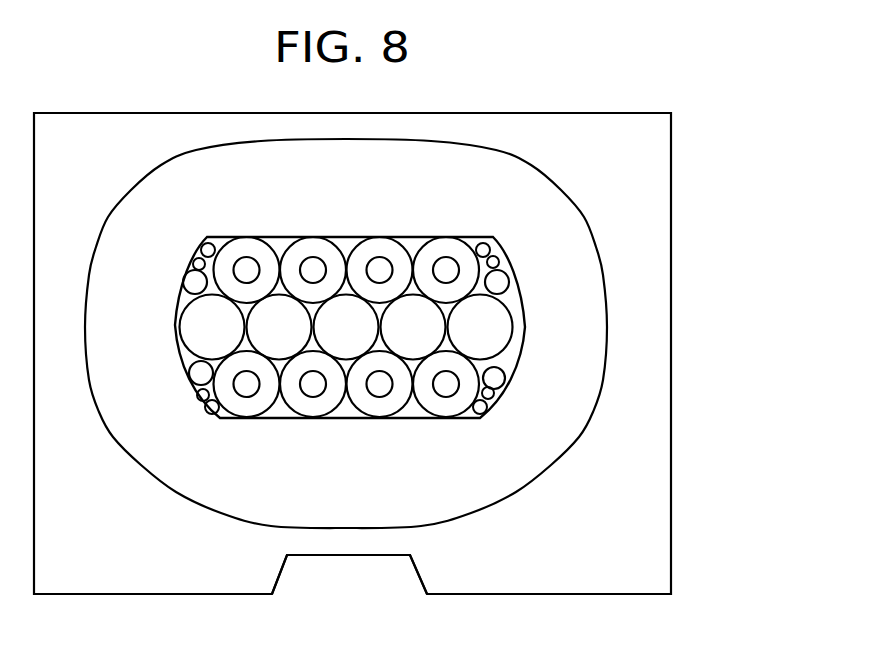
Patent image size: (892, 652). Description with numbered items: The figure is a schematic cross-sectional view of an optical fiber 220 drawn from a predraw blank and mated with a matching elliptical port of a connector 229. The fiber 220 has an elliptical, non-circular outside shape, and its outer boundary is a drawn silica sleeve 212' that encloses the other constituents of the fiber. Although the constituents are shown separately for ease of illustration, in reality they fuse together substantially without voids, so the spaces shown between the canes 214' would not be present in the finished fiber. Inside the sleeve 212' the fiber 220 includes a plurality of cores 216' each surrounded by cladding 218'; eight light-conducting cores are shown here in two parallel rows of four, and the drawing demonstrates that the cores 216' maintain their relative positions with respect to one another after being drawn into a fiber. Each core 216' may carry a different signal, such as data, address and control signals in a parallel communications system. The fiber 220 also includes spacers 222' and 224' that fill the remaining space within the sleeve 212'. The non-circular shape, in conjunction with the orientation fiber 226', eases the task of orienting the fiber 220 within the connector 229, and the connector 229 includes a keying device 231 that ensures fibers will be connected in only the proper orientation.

The fiber 220 is at (368, 333).
The drawn silica sleeve 212' is at (368, 333).
The cladding 218' is at (365, 323).
The orientation fiber 226' is at (327, 237).
The core 216' is at (439, 238).
The cane 214' is at (469, 236).
The spacer 222' is at (528, 363).
The spacer 224' is at (527, 389).
The connector 229 is at (671, 512).
The keying device 231 is at (357, 556).